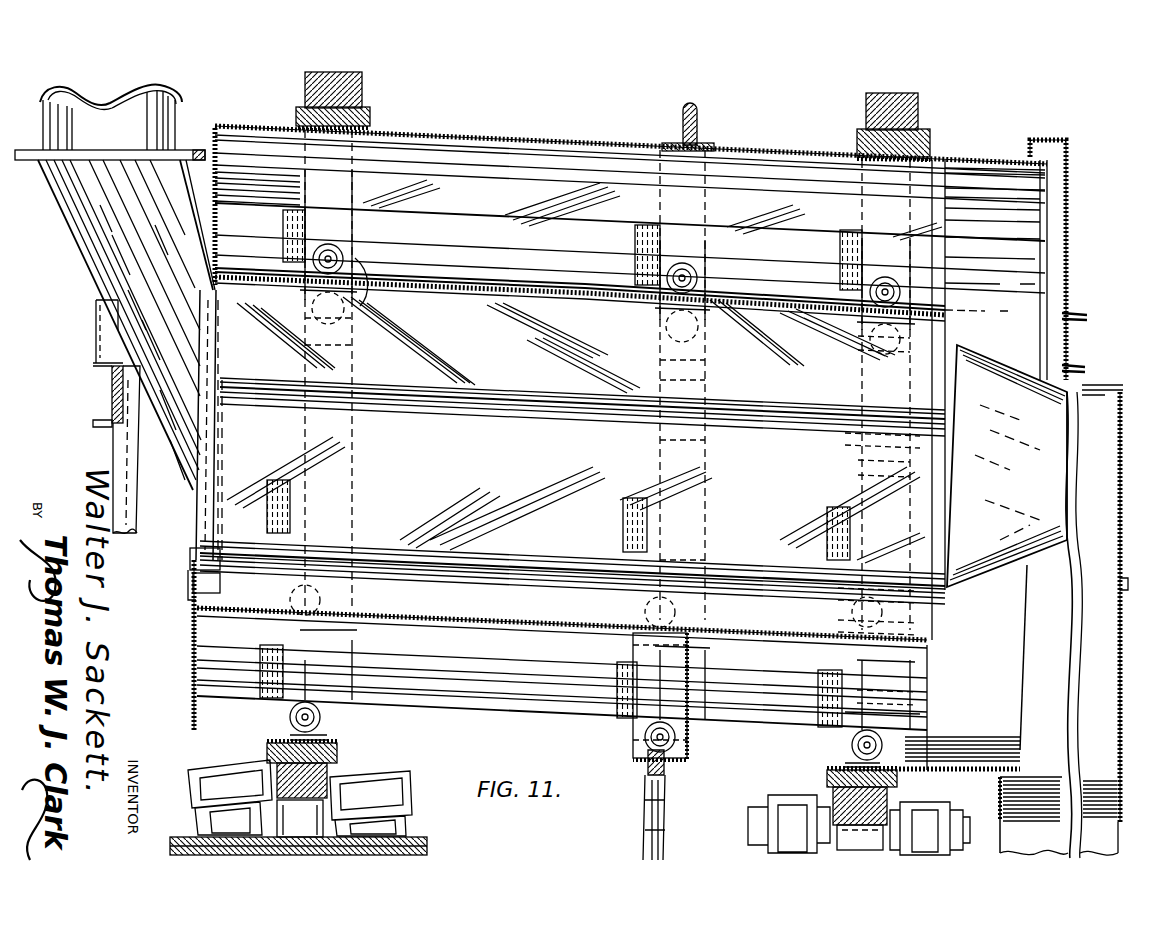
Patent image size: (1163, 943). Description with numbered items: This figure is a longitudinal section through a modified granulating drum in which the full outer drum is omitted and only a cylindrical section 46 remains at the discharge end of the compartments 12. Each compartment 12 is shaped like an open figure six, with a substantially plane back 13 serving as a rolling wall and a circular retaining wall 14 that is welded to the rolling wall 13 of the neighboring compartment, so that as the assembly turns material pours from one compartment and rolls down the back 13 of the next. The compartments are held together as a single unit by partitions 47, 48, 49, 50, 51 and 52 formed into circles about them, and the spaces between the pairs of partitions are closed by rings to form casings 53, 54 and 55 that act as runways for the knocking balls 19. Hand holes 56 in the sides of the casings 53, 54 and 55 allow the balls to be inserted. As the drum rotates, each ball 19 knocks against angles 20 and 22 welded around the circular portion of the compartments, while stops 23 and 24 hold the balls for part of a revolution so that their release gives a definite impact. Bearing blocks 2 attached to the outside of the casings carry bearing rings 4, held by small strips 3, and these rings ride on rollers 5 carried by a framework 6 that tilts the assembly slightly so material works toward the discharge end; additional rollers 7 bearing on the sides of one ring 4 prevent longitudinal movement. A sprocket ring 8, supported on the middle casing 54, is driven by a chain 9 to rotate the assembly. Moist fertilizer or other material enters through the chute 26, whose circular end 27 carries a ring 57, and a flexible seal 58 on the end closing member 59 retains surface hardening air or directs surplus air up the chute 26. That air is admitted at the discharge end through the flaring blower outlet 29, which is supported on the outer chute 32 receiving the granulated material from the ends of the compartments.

The bearing blocks 2 is at (374, 127).
The small strips 3 is at (372, 113).
The bearing rings 4 is at (366, 94).
The rollers 5 is at (837, 838).
The framework 6 is at (398, 847).
The additional rollers 7 is at (400, 783).
The sprocket ring 8 is at (700, 122).
The chain 9 is at (667, 802).
The compartments 12 is at (537, 162).
The back 13 is at (458, 200).
The retaining wall 14 is at (565, 580).
The knocking ball 19 is at (343, 254).
The angle 20 is at (858, 436).
The angle 22 is at (866, 284).
The stop 23 is at (860, 340).
The stop 24 is at (926, 600).
The chute 26 is at (95, 262).
The circular end 27 is at (216, 442).
The flaring blower outlet 29 is at (986, 372).
The outer chute 32 is at (1064, 621).
The cylindrical section 46 is at (987, 166).
The partition 47 is at (288, 287).
The partition 48 is at (352, 292).
The partition 49 is at (648, 308).
The partition 50 is at (705, 305).
The partition 51 is at (836, 322).
The partition 52 is at (916, 290).
The casing 53 is at (330, 734).
The casing 54 is at (633, 746).
The casing 55 is at (834, 766).
The hand holes 56 is at (635, 250).
The ring 57 is at (192, 606).
The flexible seal 58 is at (205, 588).
The end closing member 59 is at (191, 655).